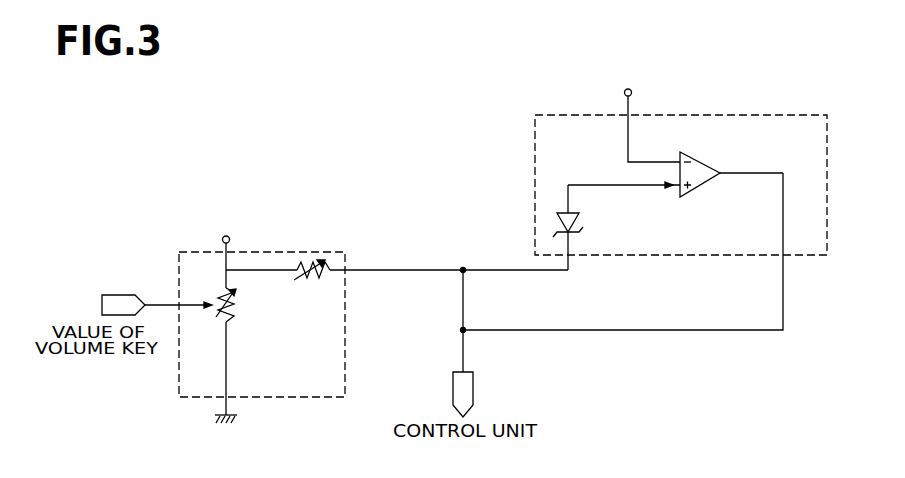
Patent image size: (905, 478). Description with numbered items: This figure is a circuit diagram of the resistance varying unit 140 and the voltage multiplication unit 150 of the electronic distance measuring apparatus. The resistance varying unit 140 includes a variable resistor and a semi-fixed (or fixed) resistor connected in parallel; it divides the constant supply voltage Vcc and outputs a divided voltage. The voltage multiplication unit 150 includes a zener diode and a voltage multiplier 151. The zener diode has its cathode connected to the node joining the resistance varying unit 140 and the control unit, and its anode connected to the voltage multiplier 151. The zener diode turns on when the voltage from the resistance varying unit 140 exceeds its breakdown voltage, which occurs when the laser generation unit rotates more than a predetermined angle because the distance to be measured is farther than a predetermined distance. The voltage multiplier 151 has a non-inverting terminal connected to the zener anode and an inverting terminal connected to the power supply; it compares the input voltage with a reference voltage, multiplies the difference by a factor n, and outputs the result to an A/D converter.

The resistance varying unit 140 is at (320, 251).
The voltage multiplication unit 150 is at (763, 115).
The voltage multiplier 151 is at (702, 160).